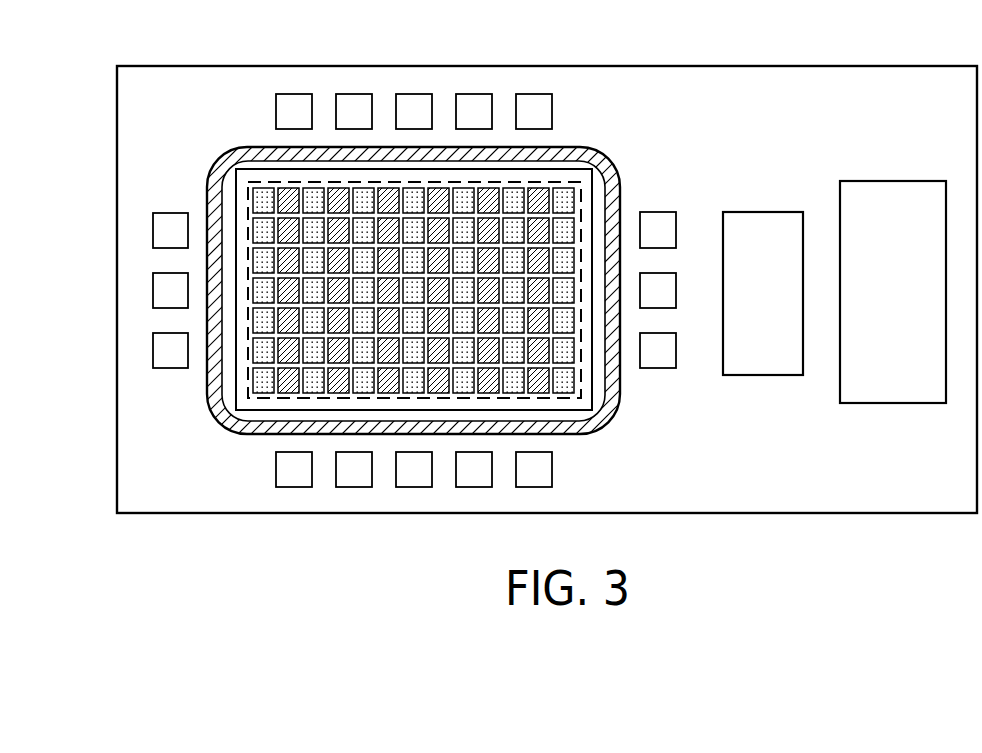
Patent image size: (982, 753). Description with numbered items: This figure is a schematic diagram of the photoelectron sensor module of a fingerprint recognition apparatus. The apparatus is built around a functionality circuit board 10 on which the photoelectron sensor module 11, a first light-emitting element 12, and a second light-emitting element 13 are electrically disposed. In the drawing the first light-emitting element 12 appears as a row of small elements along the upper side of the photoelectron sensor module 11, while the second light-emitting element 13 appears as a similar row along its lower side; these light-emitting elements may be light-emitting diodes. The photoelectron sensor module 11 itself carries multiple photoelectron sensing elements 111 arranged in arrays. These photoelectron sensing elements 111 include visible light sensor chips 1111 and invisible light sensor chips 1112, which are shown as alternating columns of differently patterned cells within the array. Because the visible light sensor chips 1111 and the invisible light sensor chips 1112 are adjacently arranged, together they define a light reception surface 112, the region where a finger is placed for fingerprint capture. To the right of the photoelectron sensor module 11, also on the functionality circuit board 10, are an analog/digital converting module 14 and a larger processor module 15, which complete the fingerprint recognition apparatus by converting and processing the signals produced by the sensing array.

The functionality circuit board 10 is at (543, 78).
The photoelectron sensor module 11 is at (619, 155).
The photoelectron sensing elements 111 is at (508, 322).
The visible light sensor chips 1111 is at (540, 388).
The invisible light sensor chips 1112 is at (567, 387).
The light reception surface 112 is at (593, 213).
The first light-emitting element 12 is at (287, 111).
The second light-emitting element 13 is at (287, 469).
The analog/digital converting module 14 is at (757, 223).
The processor module 15 is at (886, 193).